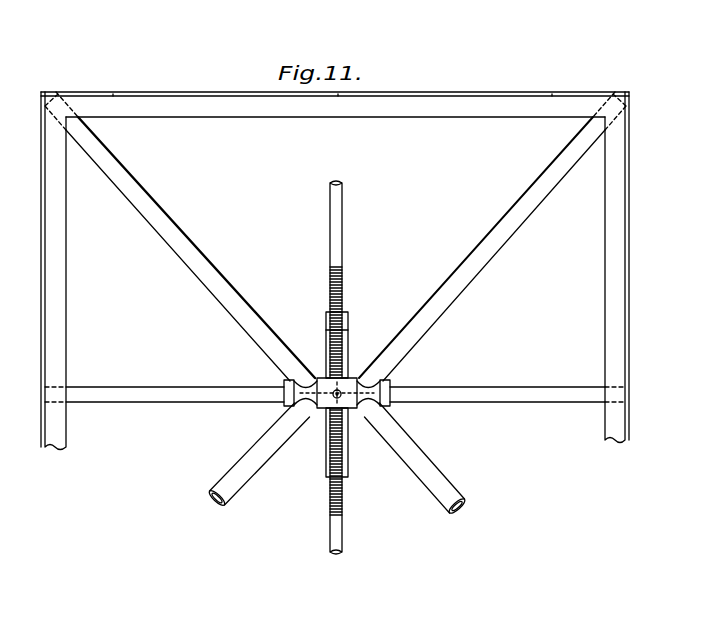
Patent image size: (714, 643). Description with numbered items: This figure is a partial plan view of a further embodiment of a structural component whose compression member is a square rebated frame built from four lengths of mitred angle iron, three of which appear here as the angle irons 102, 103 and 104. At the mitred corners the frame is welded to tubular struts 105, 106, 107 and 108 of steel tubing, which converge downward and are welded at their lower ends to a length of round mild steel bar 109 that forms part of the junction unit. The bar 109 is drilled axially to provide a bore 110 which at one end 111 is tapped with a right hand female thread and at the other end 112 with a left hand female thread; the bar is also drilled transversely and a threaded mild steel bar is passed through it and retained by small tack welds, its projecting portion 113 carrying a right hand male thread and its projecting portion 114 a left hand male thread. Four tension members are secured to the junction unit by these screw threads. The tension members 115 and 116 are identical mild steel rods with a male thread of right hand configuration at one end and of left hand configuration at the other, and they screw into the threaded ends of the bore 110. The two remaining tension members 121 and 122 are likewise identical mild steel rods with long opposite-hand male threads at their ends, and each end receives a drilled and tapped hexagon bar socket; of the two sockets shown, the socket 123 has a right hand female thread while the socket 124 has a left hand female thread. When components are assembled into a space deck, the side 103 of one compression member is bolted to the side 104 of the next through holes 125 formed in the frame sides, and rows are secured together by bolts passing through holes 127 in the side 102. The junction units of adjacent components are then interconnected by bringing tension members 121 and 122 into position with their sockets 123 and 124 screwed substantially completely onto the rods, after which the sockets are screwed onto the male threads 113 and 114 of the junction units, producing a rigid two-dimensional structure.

The angle iron 102 is at (222, 118).
The angle iron 103 is at (67, 274).
The angle iron 104 is at (613, 268).
The tubular strut 105 is at (222, 280).
The tubular strut 106 is at (462, 283).
The tubular strut 107 is at (245, 461).
The tubular strut 108 is at (425, 468).
The mild steel bar 109 is at (326, 410).
The bore 110 is at (320, 378).
The end 111 is at (283, 406).
The end 112 is at (386, 407).
The projecting portion 113 is at (348, 433).
The projecting portion 114 is at (328, 332).
The tension member 115 is at (137, 392).
The tension member 116 is at (462, 390).
The tension member 121 is at (333, 209).
The tension member 122 is at (333, 530).
The socket 123 is at (348, 319).
The socket 124 is at (329, 463).
The holes 125 is at (43, 165).
The holes 127 is at (113, 96).